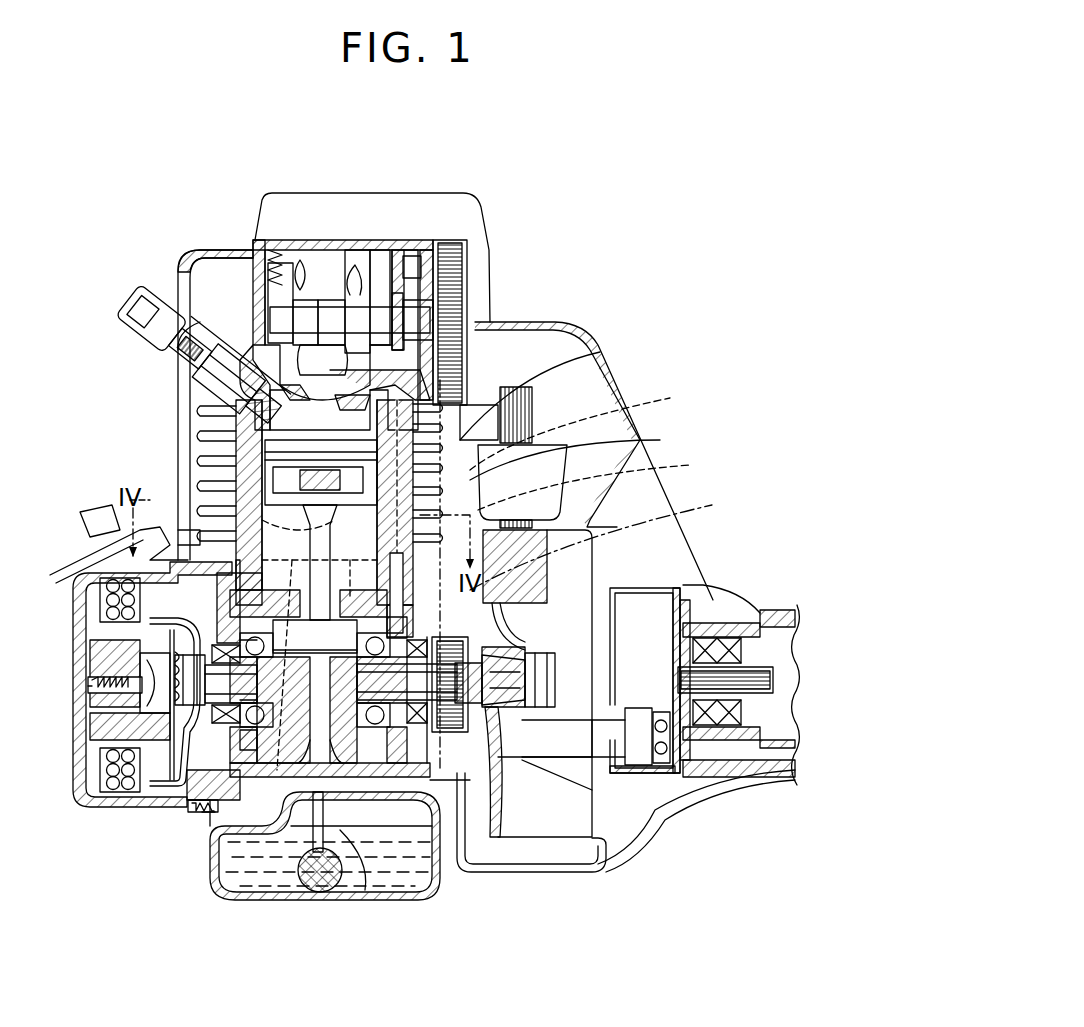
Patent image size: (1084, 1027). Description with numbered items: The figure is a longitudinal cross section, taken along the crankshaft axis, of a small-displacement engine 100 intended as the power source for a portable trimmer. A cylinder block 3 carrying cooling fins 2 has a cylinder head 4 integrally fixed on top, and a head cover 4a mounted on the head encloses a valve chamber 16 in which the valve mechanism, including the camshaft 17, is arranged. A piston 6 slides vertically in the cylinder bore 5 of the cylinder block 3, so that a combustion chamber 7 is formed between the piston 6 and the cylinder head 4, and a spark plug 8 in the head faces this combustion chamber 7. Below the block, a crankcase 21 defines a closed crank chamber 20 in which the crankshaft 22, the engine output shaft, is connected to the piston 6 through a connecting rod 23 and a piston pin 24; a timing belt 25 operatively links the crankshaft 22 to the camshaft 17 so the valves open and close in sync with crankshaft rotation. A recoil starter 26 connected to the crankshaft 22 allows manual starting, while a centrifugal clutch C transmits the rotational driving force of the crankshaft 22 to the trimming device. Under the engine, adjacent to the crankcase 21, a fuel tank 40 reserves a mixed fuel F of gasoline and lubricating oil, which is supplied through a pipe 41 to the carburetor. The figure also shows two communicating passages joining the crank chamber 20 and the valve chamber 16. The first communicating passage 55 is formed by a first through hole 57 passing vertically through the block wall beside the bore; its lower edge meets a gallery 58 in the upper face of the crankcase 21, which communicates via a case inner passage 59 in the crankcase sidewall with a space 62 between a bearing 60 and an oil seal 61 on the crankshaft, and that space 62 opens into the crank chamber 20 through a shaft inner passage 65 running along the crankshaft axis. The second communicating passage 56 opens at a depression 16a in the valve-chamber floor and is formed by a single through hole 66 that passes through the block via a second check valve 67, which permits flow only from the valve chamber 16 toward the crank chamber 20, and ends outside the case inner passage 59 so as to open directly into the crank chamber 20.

The engine 100 is at (216, 208).
The cooling fins 2 is at (205, 452).
The cylinder block 3 is at (186, 410).
The cylinder head 4 is at (253, 275).
The head cover 4a is at (372, 193).
The cylinder bore 5 is at (200, 600).
The piston 6 is at (465, 425).
The combustion chamber 7 is at (530, 322).
The spark plug 8 is at (173, 337).
The valve chamber 16 is at (387, 286).
The depression 16a is at (440, 330).
The camshaft 17 is at (330, 312).
The crank chamber 20 is at (318, 800).
The crankcase 21 is at (210, 812).
The crankshaft 22 is at (225, 715).
The connecting rod 23 is at (583, 449).
The piston pin 24 is at (480, 460).
The timing belt 25 is at (609, 538).
The recoil starter 26 is at (78, 800).
The fuel tank 40 is at (318, 900).
The pipe 41 is at (338, 835).
The first communicating passage 55 is at (190, 490).
The second communicating passage 56 is at (618, 424).
The first through hole 57 is at (265, 520).
The gallery 58 is at (277, 770).
The case inner passage 59 is at (550, 600).
The bearing 60 is at (710, 590).
The oil seal 61 is at (720, 600).
The space 62 is at (478, 780).
The shaft inner passage 65 is at (440, 735).
The through hole 66 is at (618, 424).
The second check valve 67 is at (601, 478).
The centrifugal clutch C is at (645, 782).
The mixed fuel F is at (395, 890).